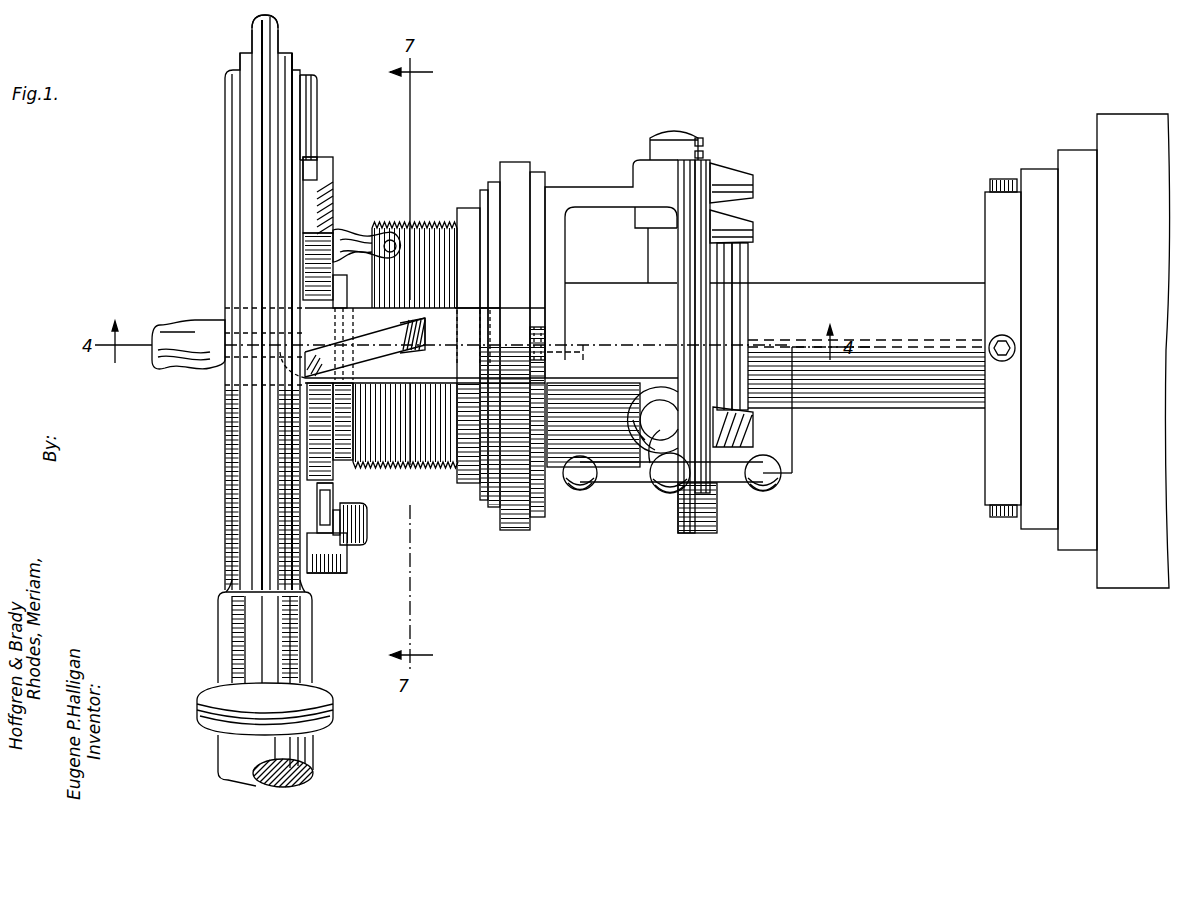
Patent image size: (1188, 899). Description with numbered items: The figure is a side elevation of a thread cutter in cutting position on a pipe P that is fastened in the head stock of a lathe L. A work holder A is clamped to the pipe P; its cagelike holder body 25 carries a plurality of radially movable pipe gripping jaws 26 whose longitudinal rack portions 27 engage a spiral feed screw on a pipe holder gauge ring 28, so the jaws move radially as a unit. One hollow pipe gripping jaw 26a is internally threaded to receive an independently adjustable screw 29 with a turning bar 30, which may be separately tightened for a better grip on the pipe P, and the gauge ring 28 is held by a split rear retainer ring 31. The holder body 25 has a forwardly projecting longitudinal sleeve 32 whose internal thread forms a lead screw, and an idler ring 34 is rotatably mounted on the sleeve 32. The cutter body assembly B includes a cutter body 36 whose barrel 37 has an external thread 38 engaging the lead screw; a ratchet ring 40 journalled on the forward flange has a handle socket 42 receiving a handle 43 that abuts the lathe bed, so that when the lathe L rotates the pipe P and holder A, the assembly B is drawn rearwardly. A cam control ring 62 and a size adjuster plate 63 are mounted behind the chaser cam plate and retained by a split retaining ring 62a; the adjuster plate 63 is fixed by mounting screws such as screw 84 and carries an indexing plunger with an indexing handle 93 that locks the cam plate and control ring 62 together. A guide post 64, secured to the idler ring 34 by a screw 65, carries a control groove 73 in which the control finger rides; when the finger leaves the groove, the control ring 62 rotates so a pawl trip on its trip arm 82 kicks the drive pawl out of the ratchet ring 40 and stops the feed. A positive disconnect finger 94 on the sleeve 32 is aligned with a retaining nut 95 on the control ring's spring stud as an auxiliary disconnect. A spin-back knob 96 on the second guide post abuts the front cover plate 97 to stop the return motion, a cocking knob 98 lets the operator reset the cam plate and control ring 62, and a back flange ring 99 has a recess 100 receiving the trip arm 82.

The cagelike holder body 25 is at (551, 186).
The pipe gripping jaws 26 is at (677, 130).
The hollow pipe gripping jaw 26a is at (668, 420).
The longitudinal rack portions 27 is at (703, 142).
The pipe holder gauge ring 28 is at (713, 167).
The independently adjustable screw 29 is at (668, 493).
The turning bar 30 is at (613, 488).
The split rear retainer ring 31 is at (730, 262).
The longitudinal sleeve 32 is at (466, 495).
The idler ring 34 is at (508, 167).
The cutter body 36 is at (418, 470).
The barrel 37 is at (427, 455).
The external thread 38 is at (430, 223).
The ratchet ring 40 is at (282, 34).
The handle socket 42 is at (218, 672).
The handle 43 is at (218, 748).
The cam control ring 62 is at (333, 480).
The split retaining ring 62a is at (333, 475).
The size adjuster plate 63 is at (330, 590).
The guide post 64 is at (466, 308).
The screw 65 is at (546, 337).
The control groove 73 is at (386, 341).
The trip arm 82 is at (322, 177).
The mounting screw 84 is at (325, 572).
The indexing handle 93 is at (367, 528).
The positive disconnect finger 94 is at (416, 333).
The retaining nut 95 is at (328, 306).
The spin-back knob 96 is at (183, 320).
The front cover plate 97 is at (225, 157).
The cocking knob 98 is at (363, 237).
The back flange ring 99 is at (303, 127).
The recess 100 is at (318, 94).
The work holder A is at (595, 186).
The cutter body assembly B is at (393, 219).
The pipe P is at (833, 283).
The lathe L is at (985, 219).